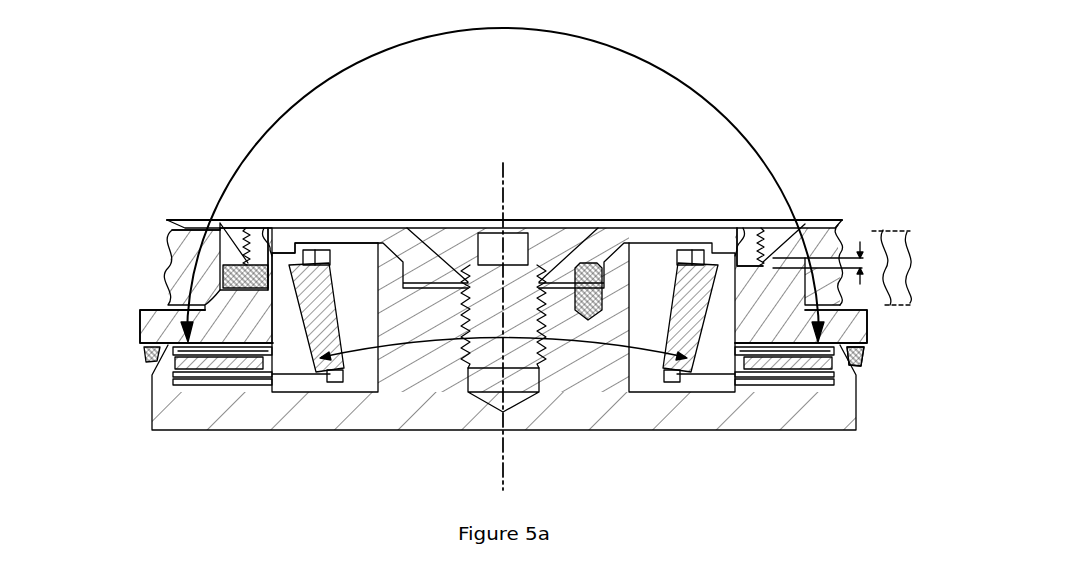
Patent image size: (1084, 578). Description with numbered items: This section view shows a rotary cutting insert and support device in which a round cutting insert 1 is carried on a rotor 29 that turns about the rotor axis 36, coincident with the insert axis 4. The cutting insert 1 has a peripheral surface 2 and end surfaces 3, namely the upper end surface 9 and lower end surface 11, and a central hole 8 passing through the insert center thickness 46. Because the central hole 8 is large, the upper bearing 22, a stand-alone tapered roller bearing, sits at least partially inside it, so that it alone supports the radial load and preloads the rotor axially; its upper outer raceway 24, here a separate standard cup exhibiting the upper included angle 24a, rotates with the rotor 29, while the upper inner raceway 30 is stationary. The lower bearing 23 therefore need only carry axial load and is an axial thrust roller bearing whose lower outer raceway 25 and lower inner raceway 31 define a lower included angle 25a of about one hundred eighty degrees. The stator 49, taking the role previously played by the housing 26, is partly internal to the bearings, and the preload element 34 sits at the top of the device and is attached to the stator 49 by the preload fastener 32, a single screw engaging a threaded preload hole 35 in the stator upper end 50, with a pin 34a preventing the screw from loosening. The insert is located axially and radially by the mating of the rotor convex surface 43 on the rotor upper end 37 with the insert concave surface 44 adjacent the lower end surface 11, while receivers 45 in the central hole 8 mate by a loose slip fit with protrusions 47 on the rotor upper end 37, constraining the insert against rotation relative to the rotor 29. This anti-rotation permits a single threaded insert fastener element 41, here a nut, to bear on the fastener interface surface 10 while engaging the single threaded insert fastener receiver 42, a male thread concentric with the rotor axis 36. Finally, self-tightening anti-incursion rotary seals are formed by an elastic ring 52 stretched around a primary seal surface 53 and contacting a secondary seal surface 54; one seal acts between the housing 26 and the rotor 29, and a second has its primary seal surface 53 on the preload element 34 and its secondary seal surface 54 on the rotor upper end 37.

The cutting insert 1 is at (840, 231).
The peripheral surface 2 is at (167, 237).
The end surfaces 3 is at (172, 232).
The insert axis 4 is at (508, 463).
The central hole 8 is at (728, 228).
The upper end surface 9 is at (175, 229).
The fastener interface surface 10 is at (770, 222).
The lower end surface 11 is at (174, 309).
The upper bearing 22 is at (298, 290).
The lower bearing 23 is at (176, 382).
The upper outer raceway 24 is at (866, 328).
The upper included angle 24a is at (420, 327).
The lower outer raceway 25 is at (862, 366).
The lower included angle 25a is at (633, 54).
The housing 26 is at (203, 418).
The rotor 29 is at (140, 338).
The upper inner raceway 30 is at (643, 240).
The lower inner raceway 31 is at (810, 350).
The preload fastener 32 is at (548, 258).
The preload element 34 is at (632, 290).
The pin 34a is at (590, 262).
The preload hole 35 is at (560, 250).
The rotor axis 36 is at (563, 331).
The rotor upper end 37 is at (912, 266).
The threaded insert fastener element 41 is at (813, 222).
The threaded insert fastener receiver 42 is at (754, 224).
The rotor convex surface 43 is at (200, 232).
The insert concave surface 44 is at (298, 238).
The receivers 45 is at (230, 228).
The insert center thickness 46 is at (862, 268).
The protrusions 47 is at (244, 224).
The stator 49 is at (597, 352).
The stator upper end 50 is at (440, 307).
The elastic ring 52 is at (275, 245).
The primary seal surface 53 is at (266, 262).
The secondary seal surface 54 is at (292, 247).